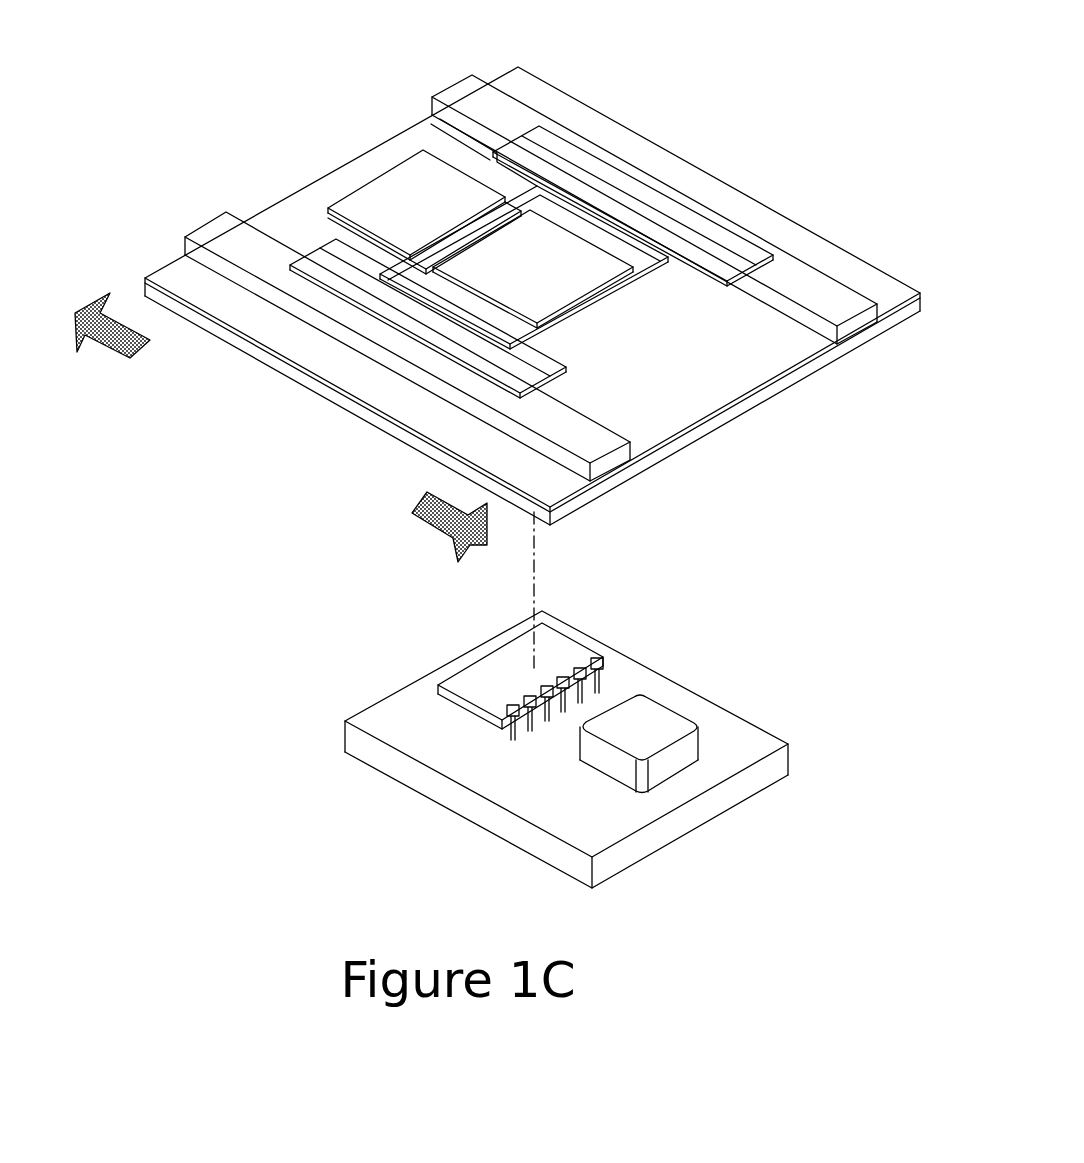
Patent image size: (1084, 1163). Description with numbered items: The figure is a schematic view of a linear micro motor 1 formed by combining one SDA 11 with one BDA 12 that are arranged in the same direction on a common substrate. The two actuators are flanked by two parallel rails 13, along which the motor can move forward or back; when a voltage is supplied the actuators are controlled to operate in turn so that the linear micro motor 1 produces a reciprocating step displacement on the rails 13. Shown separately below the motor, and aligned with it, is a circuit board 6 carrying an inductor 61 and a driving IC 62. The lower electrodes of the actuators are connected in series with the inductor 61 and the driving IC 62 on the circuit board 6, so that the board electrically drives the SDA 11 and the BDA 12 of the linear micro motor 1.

The linear micro motor 1 is at (323, 180).
The SDA 11 is at (540, 288).
The BDA 12 is at (372, 206).
The parallel rails 13 is at (470, 107).
The circuit board 6 is at (406, 727).
The inductor 61 is at (652, 725).
The driving IC 62 is at (508, 668).